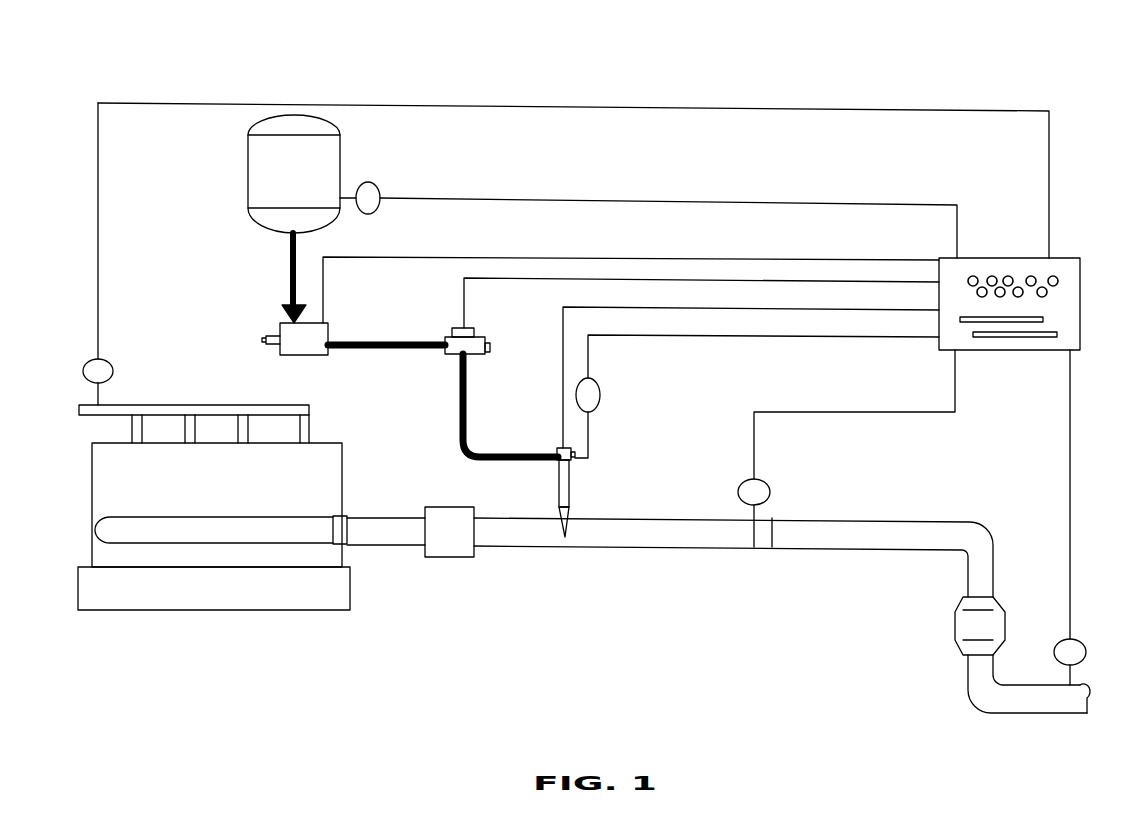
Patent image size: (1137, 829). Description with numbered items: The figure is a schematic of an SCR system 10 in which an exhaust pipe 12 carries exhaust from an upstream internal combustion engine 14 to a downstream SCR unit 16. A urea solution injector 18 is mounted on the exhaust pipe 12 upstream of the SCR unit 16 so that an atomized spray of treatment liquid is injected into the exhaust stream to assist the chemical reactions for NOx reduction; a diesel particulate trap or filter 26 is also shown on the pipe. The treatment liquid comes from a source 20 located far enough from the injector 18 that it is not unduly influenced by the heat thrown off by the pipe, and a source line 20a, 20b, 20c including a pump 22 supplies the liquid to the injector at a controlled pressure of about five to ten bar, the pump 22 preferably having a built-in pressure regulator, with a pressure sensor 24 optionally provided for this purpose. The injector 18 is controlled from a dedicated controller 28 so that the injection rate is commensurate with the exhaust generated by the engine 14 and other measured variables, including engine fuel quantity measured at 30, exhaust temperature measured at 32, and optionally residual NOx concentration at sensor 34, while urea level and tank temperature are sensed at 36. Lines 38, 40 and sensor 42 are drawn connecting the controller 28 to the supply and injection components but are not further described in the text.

The SCR system 10 is at (597, 48).
The exhaust pipe 12 is at (371, 528).
The internal combustion engine 14 is at (261, 488).
The SCR unit 16 is at (967, 625).
The urea solution injector 18 is at (571, 497).
The source of treatment liquid 20 is at (306, 174).
The source line 20a is at (290, 283).
The source line 20b is at (363, 352).
The source line 20c is at (470, 430).
The pump 22 is at (278, 327).
The pressure sensor 24 is at (464, 327).
The diesel particulate trap or filter 26 is at (460, 557).
The controller 28 is at (1063, 258).
The fuel quantity sensor 30 is at (110, 360).
The exhaust temperature sensor 32 is at (770, 485).
The residual NOx sensor 34 is at (1077, 647).
The urea level and tank temperature sensor 36 is at (384, 193).
The control line 38 is at (545, 257).
The injector control line 40 is at (562, 331).
The pressure sensor 42 is at (601, 395).